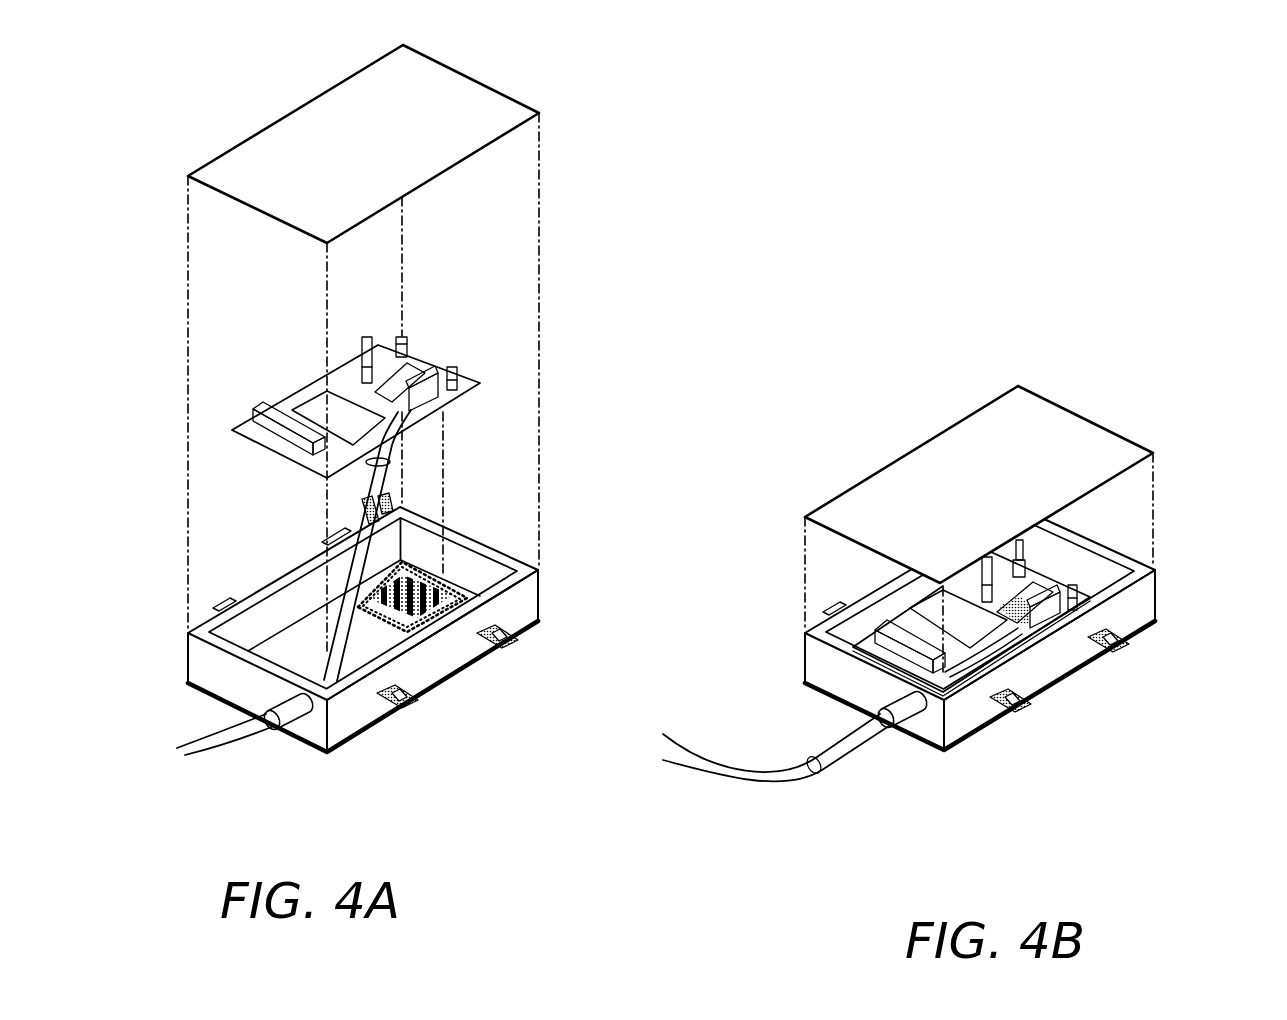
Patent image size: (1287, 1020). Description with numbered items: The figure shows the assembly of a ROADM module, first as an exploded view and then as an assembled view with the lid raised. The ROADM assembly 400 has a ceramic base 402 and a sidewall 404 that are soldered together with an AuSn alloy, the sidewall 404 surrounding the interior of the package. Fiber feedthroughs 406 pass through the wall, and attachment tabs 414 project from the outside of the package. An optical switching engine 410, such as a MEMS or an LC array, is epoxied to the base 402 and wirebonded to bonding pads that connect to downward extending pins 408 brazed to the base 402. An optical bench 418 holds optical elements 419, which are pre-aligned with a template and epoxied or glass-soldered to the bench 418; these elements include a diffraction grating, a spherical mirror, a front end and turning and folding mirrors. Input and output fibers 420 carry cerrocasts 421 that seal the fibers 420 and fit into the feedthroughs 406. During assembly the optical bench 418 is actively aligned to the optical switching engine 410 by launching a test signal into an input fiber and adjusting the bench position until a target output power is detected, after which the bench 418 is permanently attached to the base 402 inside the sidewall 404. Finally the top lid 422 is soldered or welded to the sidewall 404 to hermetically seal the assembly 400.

In FIG. 4B, the ROADM assembly 400 is at (897, 263).
In FIG. 4A, the ceramic base 402 is at (301, 650).
In FIG. 4B, the ceramic base 402 is at (980, 634).
In FIG. 4A, the sidewall 404 is at (435, 653).
In FIG. 4B, the sidewall 404 is at (1045, 657).
In FIG. 4A, the fiber feedthroughs 406 is at (292, 718).
In FIG. 4B, the fiber feedthroughs 406 is at (905, 713).
In FIG. 4A, the downward extending pins 408 is at (463, 592).
In FIG. 4A, the optical switching engine 410 is at (425, 578).
In FIG. 4A, the attachment tabs 414 is at (415, 707).
In FIG. 4B, the attachment tabs 414 is at (1025, 712).
In FIG. 4A, the optical bench 418 is at (313, 362).
In FIG. 4B, the optical bench 418 is at (912, 604).
In FIG. 4A, the optical elements 419 is at (367, 338).
In FIG. 4B, the optical elements 419 is at (976, 606).
In FIG. 4A, the input and output fibers 420 is at (390, 462).
In FIG. 4B, the input and output fibers 420 is at (812, 756).
In FIG. 4A, the cerrocasts 421 is at (365, 505).
In FIG. 4A, the top lid 422 is at (391, 151).
In FIG. 4B, the top lid 422 is at (1015, 486).